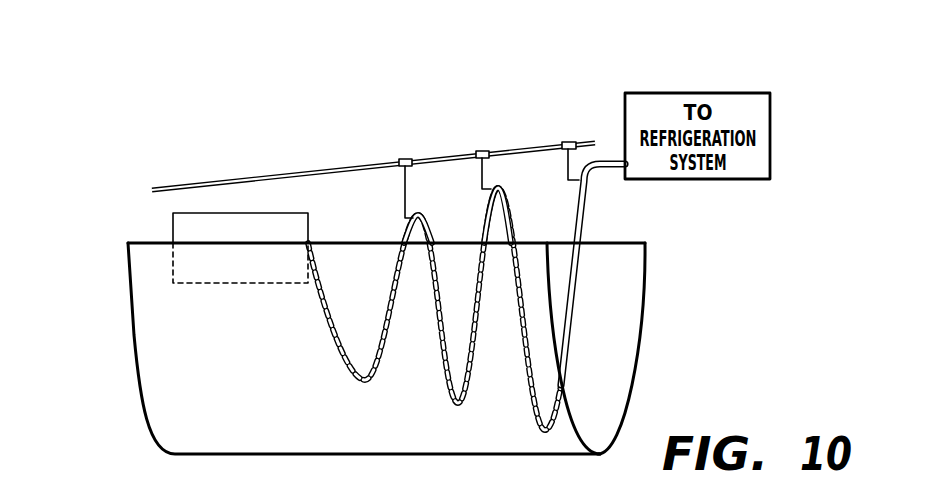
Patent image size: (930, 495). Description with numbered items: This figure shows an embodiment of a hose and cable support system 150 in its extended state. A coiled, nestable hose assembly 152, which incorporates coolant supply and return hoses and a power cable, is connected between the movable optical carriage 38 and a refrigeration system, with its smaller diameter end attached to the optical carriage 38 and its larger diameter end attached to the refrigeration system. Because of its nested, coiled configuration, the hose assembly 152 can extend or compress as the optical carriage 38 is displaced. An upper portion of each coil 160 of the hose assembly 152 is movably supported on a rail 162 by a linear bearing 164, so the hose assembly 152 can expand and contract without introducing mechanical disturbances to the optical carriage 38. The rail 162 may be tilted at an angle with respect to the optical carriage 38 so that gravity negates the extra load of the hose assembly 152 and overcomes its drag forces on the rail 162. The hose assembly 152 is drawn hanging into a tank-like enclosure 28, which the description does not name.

The hose and cable support system 150 is at (293, 46).
The rail 162 is at (223, 181).
The linear bearing 164 is at (403, 160).
The coil 160 is at (580, 186).
The hose assembly 152 is at (587, 226).
The optical carriage 38 is at (182, 224).
The tank 28 is at (167, 357).